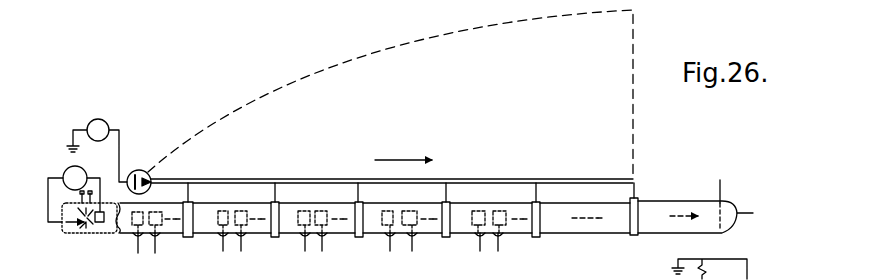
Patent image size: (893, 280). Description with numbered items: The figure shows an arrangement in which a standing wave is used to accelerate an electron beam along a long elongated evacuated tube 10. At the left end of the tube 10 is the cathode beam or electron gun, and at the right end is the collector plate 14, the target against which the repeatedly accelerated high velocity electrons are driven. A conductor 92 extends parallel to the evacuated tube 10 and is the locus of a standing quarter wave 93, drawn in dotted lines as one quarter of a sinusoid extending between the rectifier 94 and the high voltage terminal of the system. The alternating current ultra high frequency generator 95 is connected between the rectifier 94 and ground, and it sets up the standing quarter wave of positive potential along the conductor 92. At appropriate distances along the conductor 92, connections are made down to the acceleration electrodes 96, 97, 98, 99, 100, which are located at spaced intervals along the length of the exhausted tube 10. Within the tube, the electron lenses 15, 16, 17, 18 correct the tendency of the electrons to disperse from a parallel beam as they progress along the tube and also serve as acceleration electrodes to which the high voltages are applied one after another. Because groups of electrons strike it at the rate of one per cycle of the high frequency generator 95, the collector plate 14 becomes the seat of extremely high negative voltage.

The evacuated tube 10 is at (172, 234).
The collector plate 14 is at (723, 210).
The electron lens 15 is at (126, 239).
The electron lens 16 is at (220, 231).
The electron lens 17 is at (296, 238).
The electron lens 18 is at (379, 236).
The conductor 92 is at (223, 180).
The standing quarter wave 93 is at (409, 43).
The rectifier 94 is at (133, 170).
The alternating current ultra high frequency generator 95 is at (100, 119).
The acceleration electrode 96 is at (189, 238).
The acceleration electrode 97 is at (273, 237).
The acceleration electrode 98 is at (356, 229).
The acceleration electrode 99 is at (447, 234).
The acceleration electrode 100 is at (537, 234).